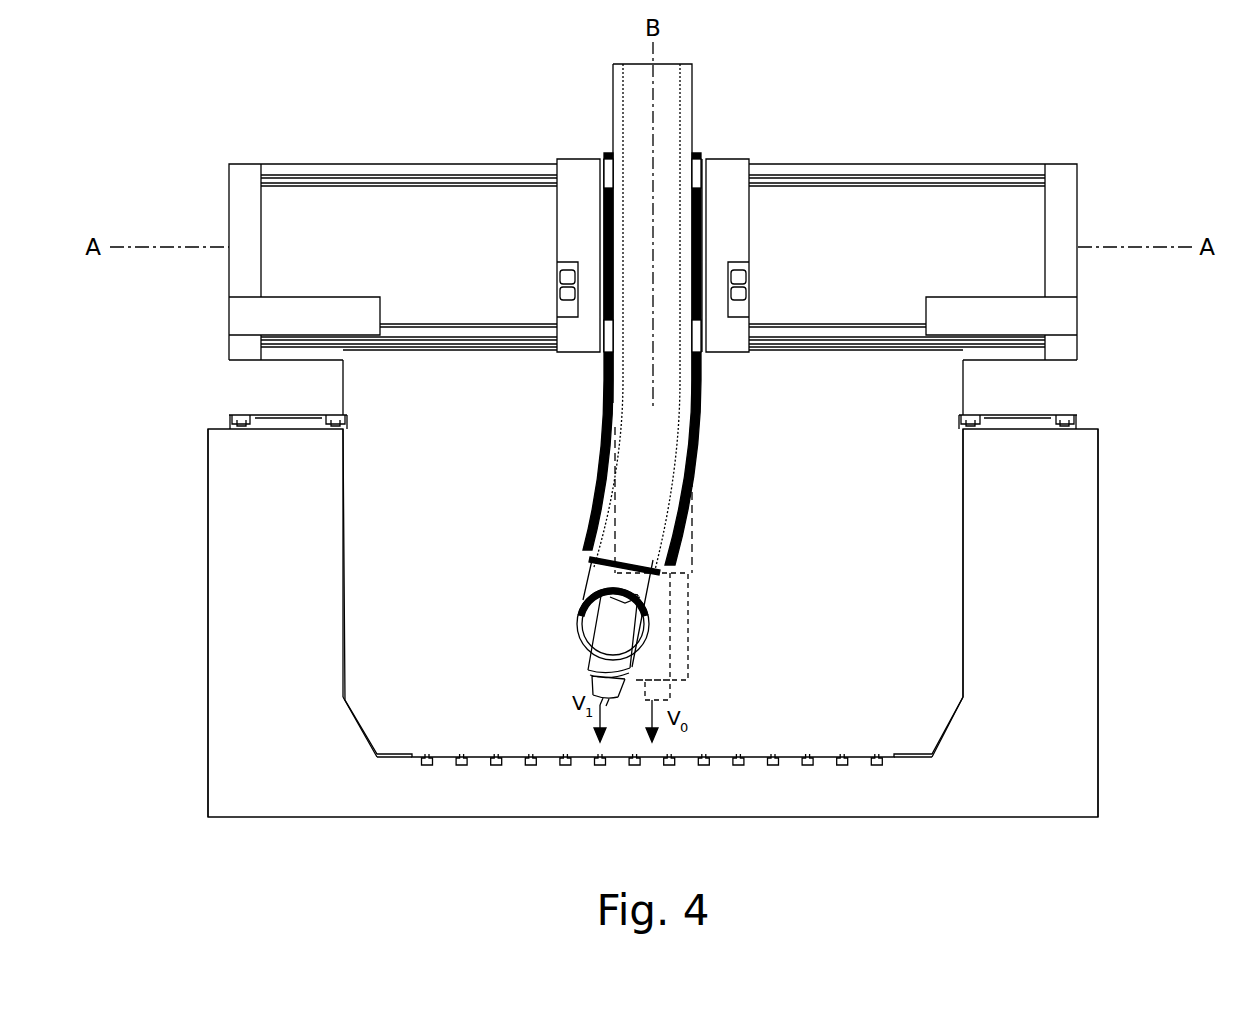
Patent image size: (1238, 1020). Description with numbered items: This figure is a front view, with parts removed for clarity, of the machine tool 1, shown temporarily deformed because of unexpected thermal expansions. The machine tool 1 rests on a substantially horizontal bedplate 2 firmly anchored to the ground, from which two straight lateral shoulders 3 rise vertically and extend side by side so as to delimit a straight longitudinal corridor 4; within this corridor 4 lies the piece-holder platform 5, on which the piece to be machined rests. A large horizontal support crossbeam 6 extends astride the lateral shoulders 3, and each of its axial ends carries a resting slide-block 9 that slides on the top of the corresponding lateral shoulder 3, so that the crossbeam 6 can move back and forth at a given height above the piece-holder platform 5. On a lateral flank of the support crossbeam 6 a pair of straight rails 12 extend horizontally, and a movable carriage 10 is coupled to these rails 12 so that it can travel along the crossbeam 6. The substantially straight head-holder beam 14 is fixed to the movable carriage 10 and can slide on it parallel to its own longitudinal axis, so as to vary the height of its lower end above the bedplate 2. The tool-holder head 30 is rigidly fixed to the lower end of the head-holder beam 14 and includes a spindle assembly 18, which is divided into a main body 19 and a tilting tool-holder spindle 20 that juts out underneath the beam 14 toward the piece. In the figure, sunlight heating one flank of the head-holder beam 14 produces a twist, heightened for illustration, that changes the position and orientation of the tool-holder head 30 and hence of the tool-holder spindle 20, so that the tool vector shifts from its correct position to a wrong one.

The machine tool 1 is at (1133, 135).
The bedplate 2 is at (475, 800).
The lateral shoulders 3 is at (260, 552).
The longitudinal corridor 4 is at (955, 580).
The piece-holder platform 5 is at (818, 746).
The support crossbeam 6 is at (376, 233).
The resting slide-block 9 is at (258, 388).
The movable carriage 10 is at (725, 172).
The straight rails 12 is at (436, 175).
The head-holder beam 14 is at (637, 115).
The spindle assembly 18 is at (659, 622).
The main body 19 is at (597, 585).
The tool-holder spindle 20 is at (608, 657).
The tool-holder head 30 is at (581, 618).